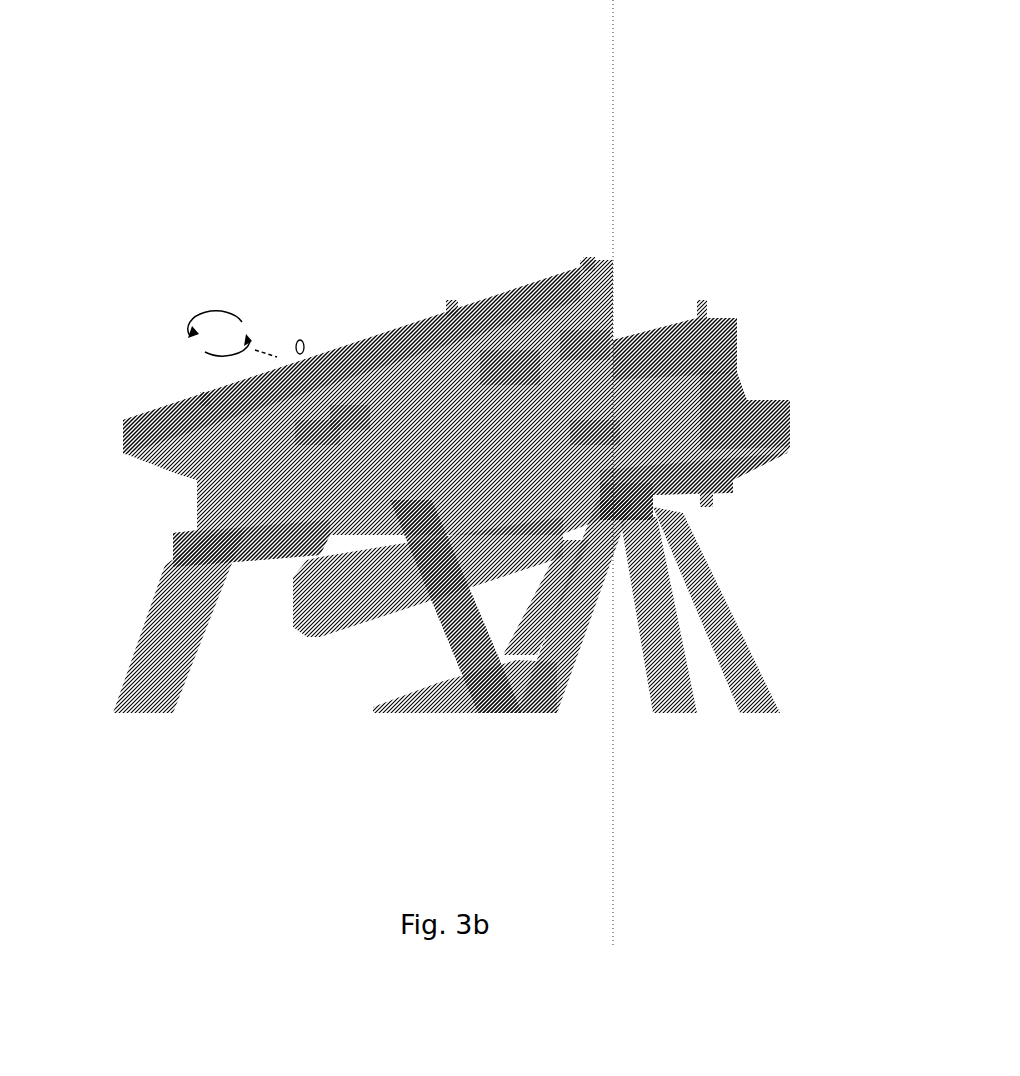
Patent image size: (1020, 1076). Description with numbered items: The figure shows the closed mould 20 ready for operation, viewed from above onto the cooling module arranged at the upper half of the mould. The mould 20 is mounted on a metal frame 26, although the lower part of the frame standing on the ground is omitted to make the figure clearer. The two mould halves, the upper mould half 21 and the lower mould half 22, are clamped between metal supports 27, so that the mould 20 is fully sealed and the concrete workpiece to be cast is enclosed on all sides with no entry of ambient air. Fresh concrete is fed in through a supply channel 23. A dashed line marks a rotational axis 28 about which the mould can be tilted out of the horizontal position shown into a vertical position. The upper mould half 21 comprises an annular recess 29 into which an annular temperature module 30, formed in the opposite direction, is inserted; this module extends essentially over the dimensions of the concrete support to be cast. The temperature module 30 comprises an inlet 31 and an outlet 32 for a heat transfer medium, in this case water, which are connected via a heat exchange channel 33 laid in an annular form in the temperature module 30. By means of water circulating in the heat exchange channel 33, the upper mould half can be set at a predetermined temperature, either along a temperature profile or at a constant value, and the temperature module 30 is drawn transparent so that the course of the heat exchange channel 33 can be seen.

The mould 20 is at (522, 167).
The upper mould half 21 is at (737, 400).
The lower mould half 22 is at (760, 453).
The supply channel 23 is at (257, 505).
The metal frame 26 is at (103, 497).
The metal supports 27 is at (543, 305).
The rotational axis 28 is at (653, 517).
The annular recess 29 is at (492, 482).
The temperature module 30 is at (318, 430).
The inlet 31 is at (520, 372).
The outlet 32 is at (580, 347).
The heat exchange channel 33 is at (343, 418).